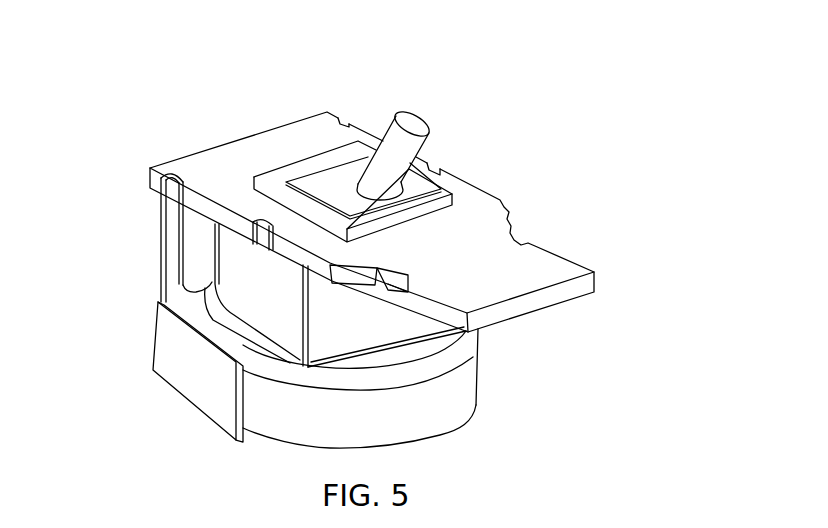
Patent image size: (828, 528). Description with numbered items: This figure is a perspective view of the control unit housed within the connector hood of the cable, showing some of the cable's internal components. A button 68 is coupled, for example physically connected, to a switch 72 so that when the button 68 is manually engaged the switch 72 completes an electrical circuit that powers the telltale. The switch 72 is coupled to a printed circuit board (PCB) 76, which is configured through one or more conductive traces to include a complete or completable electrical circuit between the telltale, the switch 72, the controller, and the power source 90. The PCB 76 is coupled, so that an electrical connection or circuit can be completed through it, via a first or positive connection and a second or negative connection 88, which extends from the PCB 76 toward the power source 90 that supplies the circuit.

The button 68 is at (421, 111).
The switch 72 is at (455, 196).
The printed circuit board (PCB) 76 is at (573, 260).
The second or negative connection 88 is at (236, 290).
The power source 90 is at (478, 386).